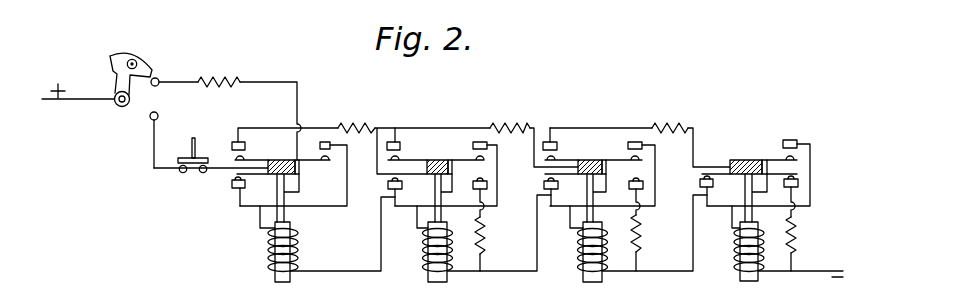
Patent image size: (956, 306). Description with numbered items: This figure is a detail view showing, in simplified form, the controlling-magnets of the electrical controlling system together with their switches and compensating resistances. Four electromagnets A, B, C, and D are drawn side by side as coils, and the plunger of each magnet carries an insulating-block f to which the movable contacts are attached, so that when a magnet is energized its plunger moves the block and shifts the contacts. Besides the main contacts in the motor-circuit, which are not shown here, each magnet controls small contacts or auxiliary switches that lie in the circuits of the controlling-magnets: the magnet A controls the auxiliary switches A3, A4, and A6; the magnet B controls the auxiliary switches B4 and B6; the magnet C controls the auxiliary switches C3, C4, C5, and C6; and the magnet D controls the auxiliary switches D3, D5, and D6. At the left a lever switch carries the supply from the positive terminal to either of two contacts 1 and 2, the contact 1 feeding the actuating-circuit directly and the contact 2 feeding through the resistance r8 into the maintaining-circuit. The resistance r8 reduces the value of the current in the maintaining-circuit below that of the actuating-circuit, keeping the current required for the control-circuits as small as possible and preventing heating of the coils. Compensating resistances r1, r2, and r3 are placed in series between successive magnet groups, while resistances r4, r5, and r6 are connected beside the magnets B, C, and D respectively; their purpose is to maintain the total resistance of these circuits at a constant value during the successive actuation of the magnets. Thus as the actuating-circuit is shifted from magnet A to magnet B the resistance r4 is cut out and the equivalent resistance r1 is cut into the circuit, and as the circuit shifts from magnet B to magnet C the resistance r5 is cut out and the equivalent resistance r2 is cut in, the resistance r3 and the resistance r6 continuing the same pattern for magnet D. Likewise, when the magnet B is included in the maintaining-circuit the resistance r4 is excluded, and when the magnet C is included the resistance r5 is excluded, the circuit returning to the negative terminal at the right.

The switch contact 1 is at (145, 140).
The switch contact 2 is at (158, 91).
The maintaining-circuit resistance r8 is at (219, 71).
The compensating resistance r1 is at (356, 116).
The compensating resistance r2 is at (510, 116).
The compensating resistance r3 is at (670, 117).
The compensating resistance r4 is at (490, 235).
The compensating resistance r5 is at (647, 233).
The compensating resistance r6 is at (802, 235).
The controlling electromagnet A is at (266, 252).
The auxiliary switch A3 is at (224, 191).
The auxiliary switch A4 is at (285, 142).
The auxiliary switch A6 is at (293, 168).
The controlling electromagnet B is at (426, 252).
The auxiliary switch B4 is at (406, 142).
The auxiliary switch B6 is at (446, 169).
The controlling electromagnet C is at (584, 252).
The auxiliary switch C3 is at (563, 192).
The auxiliary switch C4 is at (562, 141).
The auxiliary switch C5 is at (627, 196).
The auxiliary switch C6 is at (602, 169).
The controlling electromagnet D is at (739, 251).
The auxiliary switch D3 is at (719, 191).
The auxiliary switch D5 is at (783, 196).
The auxiliary switch D6 is at (758, 161).
The insulating-block f is at (517, 169).